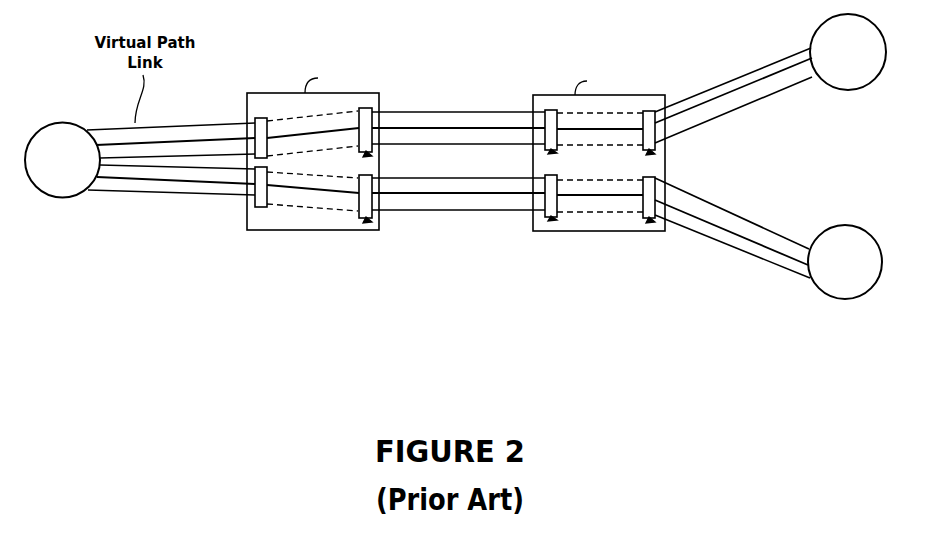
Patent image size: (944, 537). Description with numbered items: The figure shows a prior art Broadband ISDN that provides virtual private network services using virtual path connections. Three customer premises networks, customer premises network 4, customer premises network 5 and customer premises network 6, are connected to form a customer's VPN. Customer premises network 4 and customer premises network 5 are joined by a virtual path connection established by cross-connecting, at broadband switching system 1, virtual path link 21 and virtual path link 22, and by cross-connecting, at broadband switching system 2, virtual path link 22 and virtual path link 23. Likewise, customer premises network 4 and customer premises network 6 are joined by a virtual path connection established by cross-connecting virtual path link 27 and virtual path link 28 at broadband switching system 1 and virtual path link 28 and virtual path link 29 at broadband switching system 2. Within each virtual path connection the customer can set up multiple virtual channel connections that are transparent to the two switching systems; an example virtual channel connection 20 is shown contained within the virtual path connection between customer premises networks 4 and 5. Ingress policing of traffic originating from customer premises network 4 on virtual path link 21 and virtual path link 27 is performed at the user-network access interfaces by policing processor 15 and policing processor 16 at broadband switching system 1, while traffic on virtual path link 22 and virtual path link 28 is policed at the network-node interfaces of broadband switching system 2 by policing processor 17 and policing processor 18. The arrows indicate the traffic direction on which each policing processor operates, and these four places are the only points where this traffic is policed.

The broadband switching system 1 is at (308, 231).
The broadband switching system 2 is at (617, 232).
The customer premises network 4 is at (60, 198).
The customer premises network 5 is at (843, 90).
The customer premises network 6 is at (845, 299).
The policing processor 15 is at (255, 117).
The policing processor 16 is at (256, 207).
The policing processor 17 is at (550, 108).
The policing processor 18 is at (556, 218).
The virtual channel connection 20 is at (217, 136).
The virtual path link 21 is at (187, 123).
The virtual path link 22 is at (482, 112).
The virtual path link 23 is at (742, 73).
The virtual path link 27 is at (192, 190).
The virtual path link 28 is at (482, 212).
The virtual path link 29 is at (757, 262).